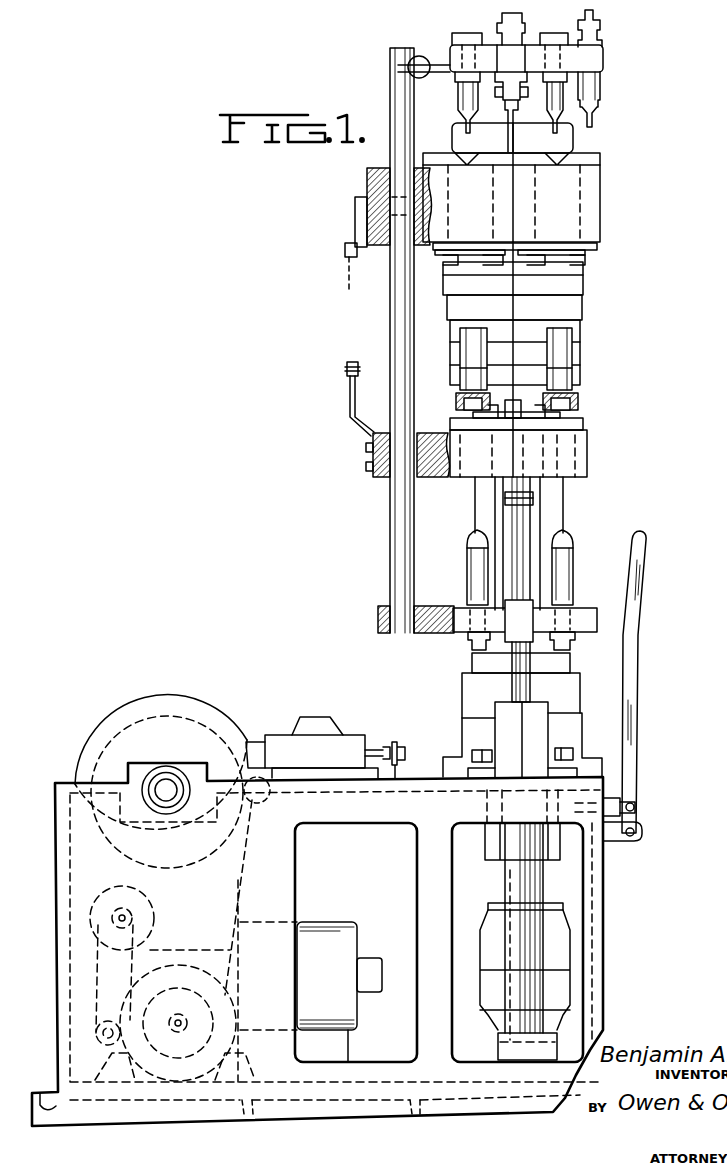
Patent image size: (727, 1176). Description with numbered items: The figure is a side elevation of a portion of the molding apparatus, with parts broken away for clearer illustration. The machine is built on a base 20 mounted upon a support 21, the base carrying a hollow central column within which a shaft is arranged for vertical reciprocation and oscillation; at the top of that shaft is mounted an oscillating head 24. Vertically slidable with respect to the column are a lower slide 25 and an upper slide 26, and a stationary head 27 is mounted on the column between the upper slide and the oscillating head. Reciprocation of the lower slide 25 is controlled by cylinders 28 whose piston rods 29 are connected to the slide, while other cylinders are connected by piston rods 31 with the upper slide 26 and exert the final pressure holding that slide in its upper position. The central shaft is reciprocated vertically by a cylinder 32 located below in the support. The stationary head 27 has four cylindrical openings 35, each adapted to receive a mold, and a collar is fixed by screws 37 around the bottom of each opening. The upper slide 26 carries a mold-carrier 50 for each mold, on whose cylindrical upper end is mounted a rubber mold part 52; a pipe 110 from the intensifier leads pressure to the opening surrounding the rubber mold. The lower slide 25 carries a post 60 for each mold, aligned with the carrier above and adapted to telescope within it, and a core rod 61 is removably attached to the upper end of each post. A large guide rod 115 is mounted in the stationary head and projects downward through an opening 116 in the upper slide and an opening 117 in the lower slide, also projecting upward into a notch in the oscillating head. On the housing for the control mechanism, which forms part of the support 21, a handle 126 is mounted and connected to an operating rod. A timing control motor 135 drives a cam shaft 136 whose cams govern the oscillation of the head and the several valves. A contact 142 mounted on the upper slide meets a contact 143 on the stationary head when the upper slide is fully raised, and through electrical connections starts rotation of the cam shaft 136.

The base 20 is at (568, 739).
The support 21 is at (601, 883).
The oscillating head 24 is at (581, 59).
The lower slide 25 is at (586, 617).
The upper slide 26 is at (585, 461).
The stationary head 27 is at (592, 205).
The cylinders 28 is at (535, 961).
The piston rods 29 is at (520, 660).
The piston rods 31 is at (532, 531).
The cylinder 32 is at (482, 948).
The cylindrical openings 35 is at (582, 246).
The screws 37 is at (580, 259).
The mold-carrier 50 is at (585, 416).
The rubber mold part 52 is at (565, 351).
The post 60 is at (467, 577).
The core rod 61 is at (475, 512).
The pipe 110 is at (368, 186).
The guide rod 115 is at (398, 317).
The opening 116 is at (378, 458).
The opening 117 is at (378, 618).
The handle 126 is at (639, 613).
The timing control motor 135 is at (326, 945).
The cam shaft 136 is at (171, 800).
The contact 142 is at (348, 372).
The contact 143 is at (355, 234).